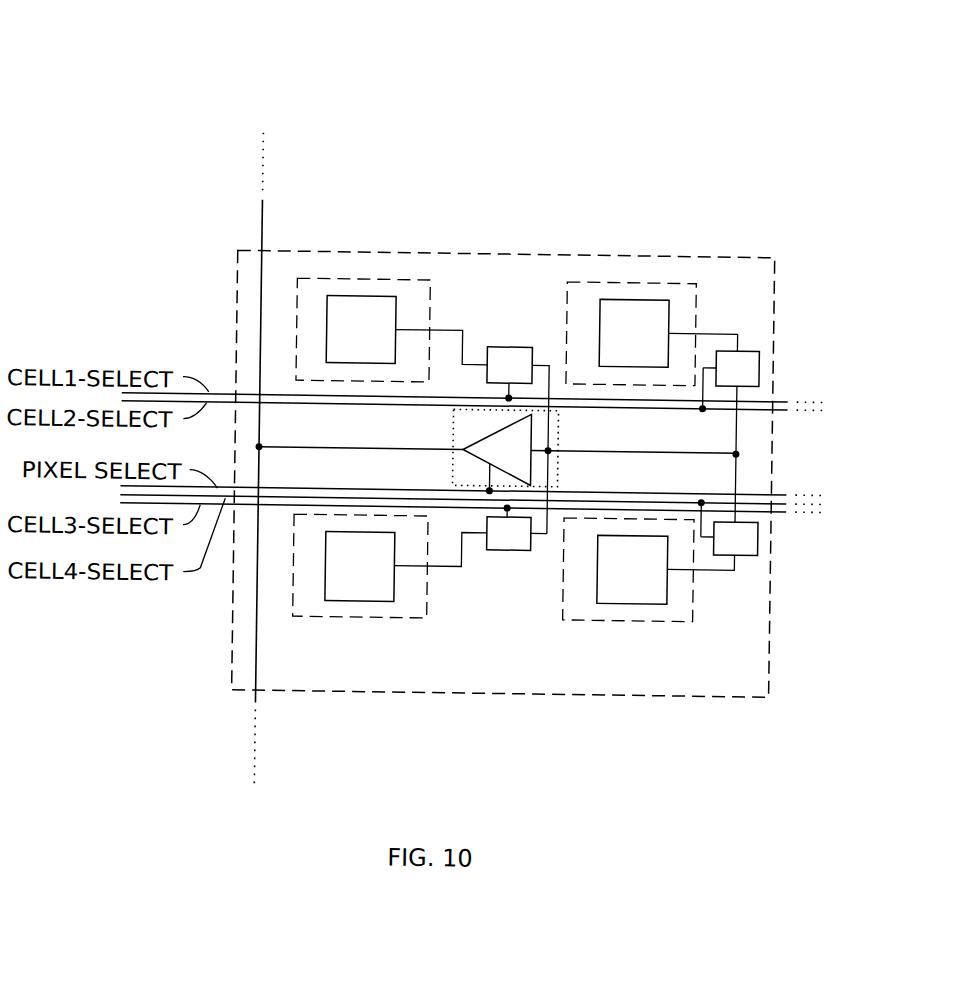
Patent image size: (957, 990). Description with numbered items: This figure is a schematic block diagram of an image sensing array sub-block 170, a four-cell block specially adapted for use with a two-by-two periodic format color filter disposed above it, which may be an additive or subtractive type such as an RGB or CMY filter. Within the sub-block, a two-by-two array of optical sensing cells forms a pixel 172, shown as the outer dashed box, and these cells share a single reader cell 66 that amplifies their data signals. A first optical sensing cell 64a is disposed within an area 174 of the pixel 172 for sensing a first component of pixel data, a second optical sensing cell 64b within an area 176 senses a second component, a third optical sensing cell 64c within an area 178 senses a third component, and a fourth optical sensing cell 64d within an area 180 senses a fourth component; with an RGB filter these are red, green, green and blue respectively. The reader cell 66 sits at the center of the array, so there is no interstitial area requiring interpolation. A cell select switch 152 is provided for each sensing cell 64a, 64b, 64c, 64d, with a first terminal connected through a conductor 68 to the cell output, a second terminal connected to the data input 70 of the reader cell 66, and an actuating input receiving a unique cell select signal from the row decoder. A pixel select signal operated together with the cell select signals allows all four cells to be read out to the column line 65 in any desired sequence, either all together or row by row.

The image sensing array sub-block 170 is at (172, 85).
The column line 65 is at (262, 700).
The pixel 172 is at (774, 641).
The area 174 is at (359, 365).
The area 176 is at (634, 365).
The area 178 is at (360, 603).
The area 180 is at (635, 602).
The first optical sensing cell 64a is at (341, 343).
The second optical sensing cell 64b is at (614, 343).
The third optical sensing cell 64c is at (342, 579).
The fourth optical sensing cell 64d is at (615, 578).
The cell select switch 152 is at (490, 376).
The conductor 68 is at (438, 331).
The reader cell 66 is at (493, 461).
The data input 70 is at (535, 444).